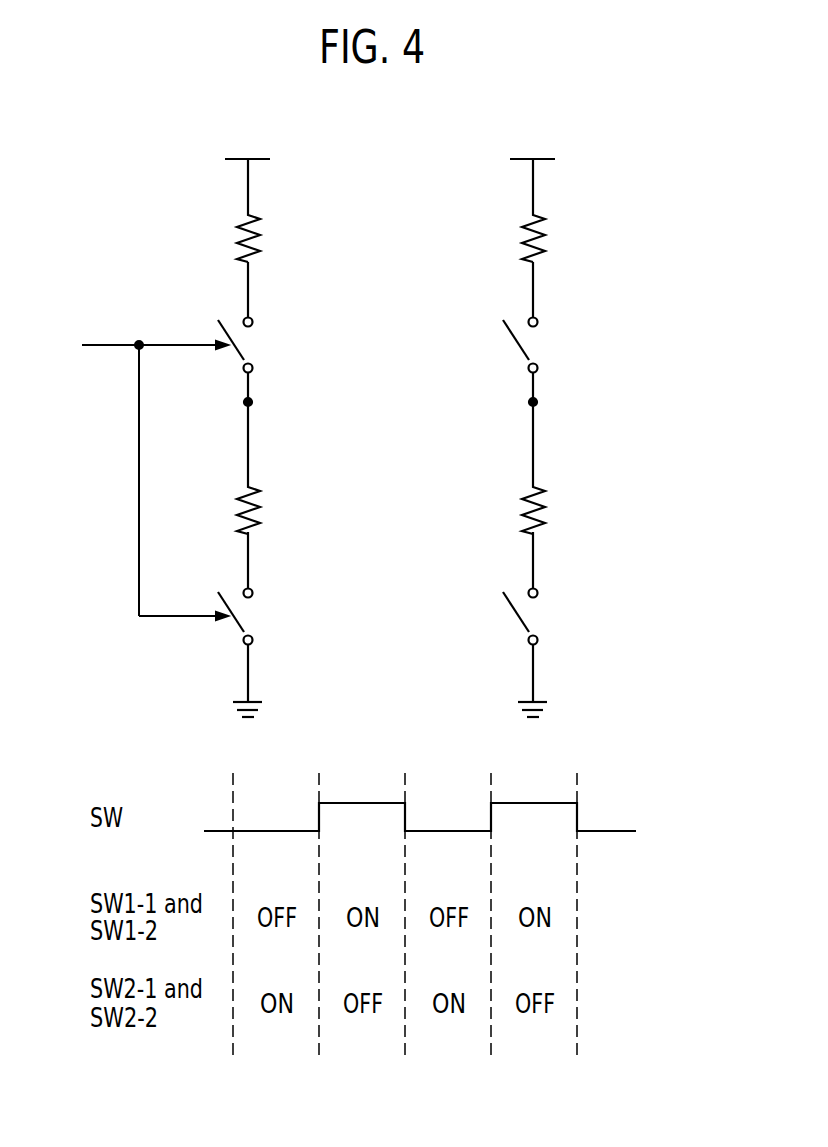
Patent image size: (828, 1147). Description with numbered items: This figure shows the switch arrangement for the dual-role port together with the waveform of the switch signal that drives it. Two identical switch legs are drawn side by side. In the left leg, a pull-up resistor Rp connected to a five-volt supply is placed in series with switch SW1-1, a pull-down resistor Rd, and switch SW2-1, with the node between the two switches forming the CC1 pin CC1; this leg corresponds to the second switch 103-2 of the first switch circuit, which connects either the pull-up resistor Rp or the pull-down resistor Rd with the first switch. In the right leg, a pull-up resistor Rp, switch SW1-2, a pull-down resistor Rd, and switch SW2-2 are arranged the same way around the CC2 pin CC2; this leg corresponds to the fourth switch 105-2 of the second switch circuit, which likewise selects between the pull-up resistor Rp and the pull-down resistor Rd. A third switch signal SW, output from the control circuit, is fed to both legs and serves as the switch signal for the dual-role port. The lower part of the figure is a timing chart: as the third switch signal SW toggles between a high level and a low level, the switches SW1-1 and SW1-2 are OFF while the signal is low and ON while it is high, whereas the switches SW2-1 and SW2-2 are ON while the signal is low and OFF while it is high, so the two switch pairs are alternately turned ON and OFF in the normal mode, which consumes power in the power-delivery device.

The second switch 103-2 is at (374, 431).
The fourth switch 105-2 is at (601, 431).
The switch SW1-1 is at (272, 345).
The switch SW2-1 is at (272, 617).
The switch SW1-2 is at (558, 345).
The switch SW2-2 is at (558, 617).
The CC1 pin CC1 is at (248, 402).
The CC2 pin CC2 is at (533, 402).
The pull-up resistor Rp is at (374, 237).
The pull-down resistor Rd is at (374, 509).
The third switch signal SW is at (135, 474).